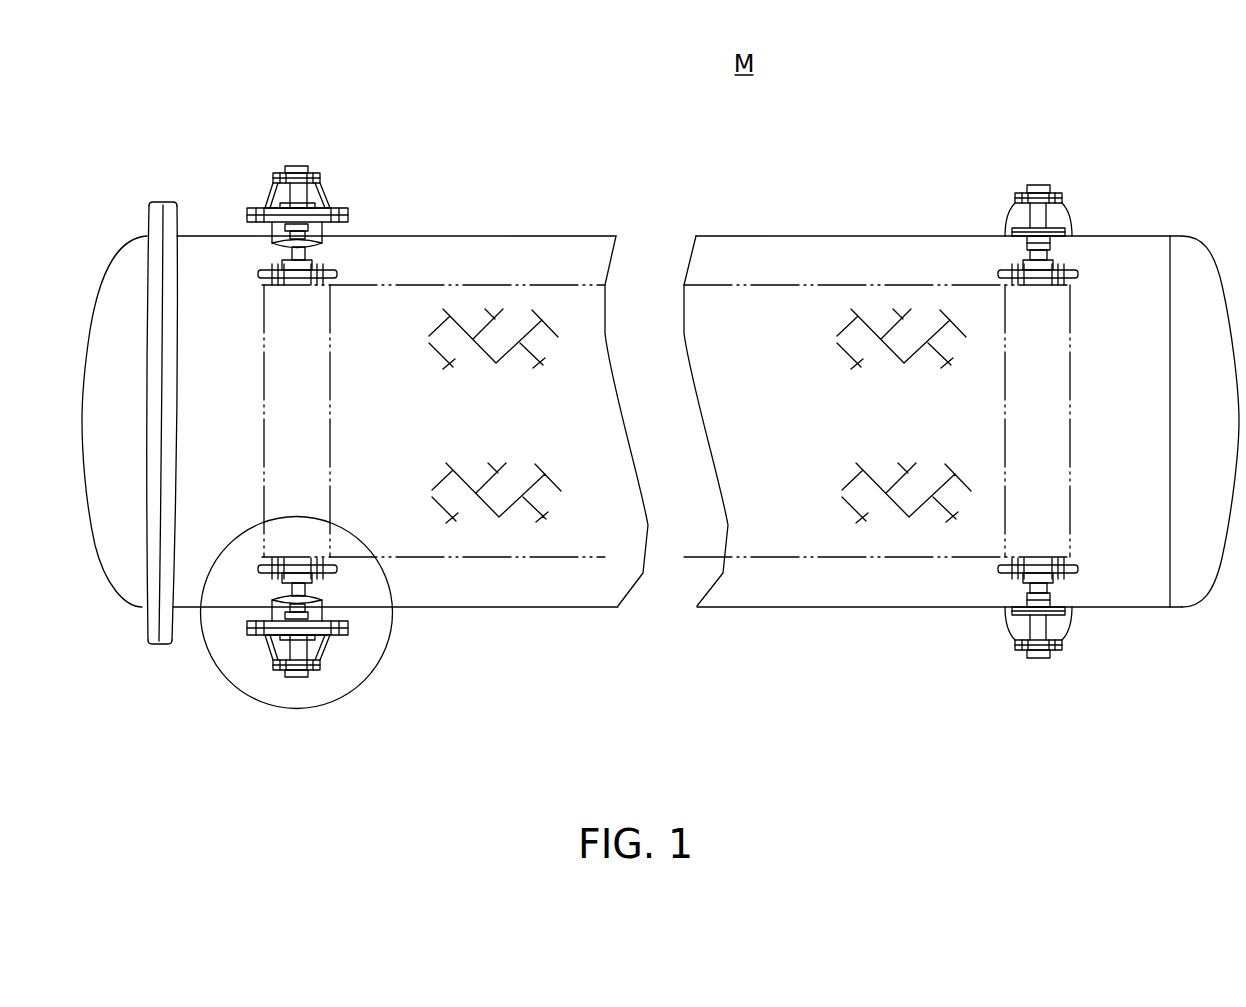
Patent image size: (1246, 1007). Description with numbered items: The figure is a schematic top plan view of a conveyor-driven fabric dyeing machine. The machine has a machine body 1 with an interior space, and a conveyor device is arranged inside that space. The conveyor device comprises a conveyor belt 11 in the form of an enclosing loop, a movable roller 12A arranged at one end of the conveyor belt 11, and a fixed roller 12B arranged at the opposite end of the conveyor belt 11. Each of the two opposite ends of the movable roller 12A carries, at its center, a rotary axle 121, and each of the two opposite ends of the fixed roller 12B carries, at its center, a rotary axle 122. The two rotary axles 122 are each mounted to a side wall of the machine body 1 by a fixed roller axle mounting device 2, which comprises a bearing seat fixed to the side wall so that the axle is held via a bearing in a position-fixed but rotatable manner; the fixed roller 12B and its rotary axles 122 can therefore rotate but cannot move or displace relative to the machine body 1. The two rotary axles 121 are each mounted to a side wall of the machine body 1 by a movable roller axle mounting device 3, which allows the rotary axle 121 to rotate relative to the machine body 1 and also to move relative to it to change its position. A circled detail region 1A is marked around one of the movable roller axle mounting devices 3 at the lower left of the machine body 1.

The machine body 1 is at (568, 235).
The conveyor belt 11 is at (730, 297).
The movable roller 12A is at (318, 326).
The fixed roller 12B is at (1065, 320).
The rotary axle 121 is at (295, 195).
The rotary axle 122 is at (1040, 215).
The fixed roller axle mounting device 2 is at (985, 190).
The movable roller axle mounting device 3 is at (248, 180).
The detail region 1A is at (385, 657).